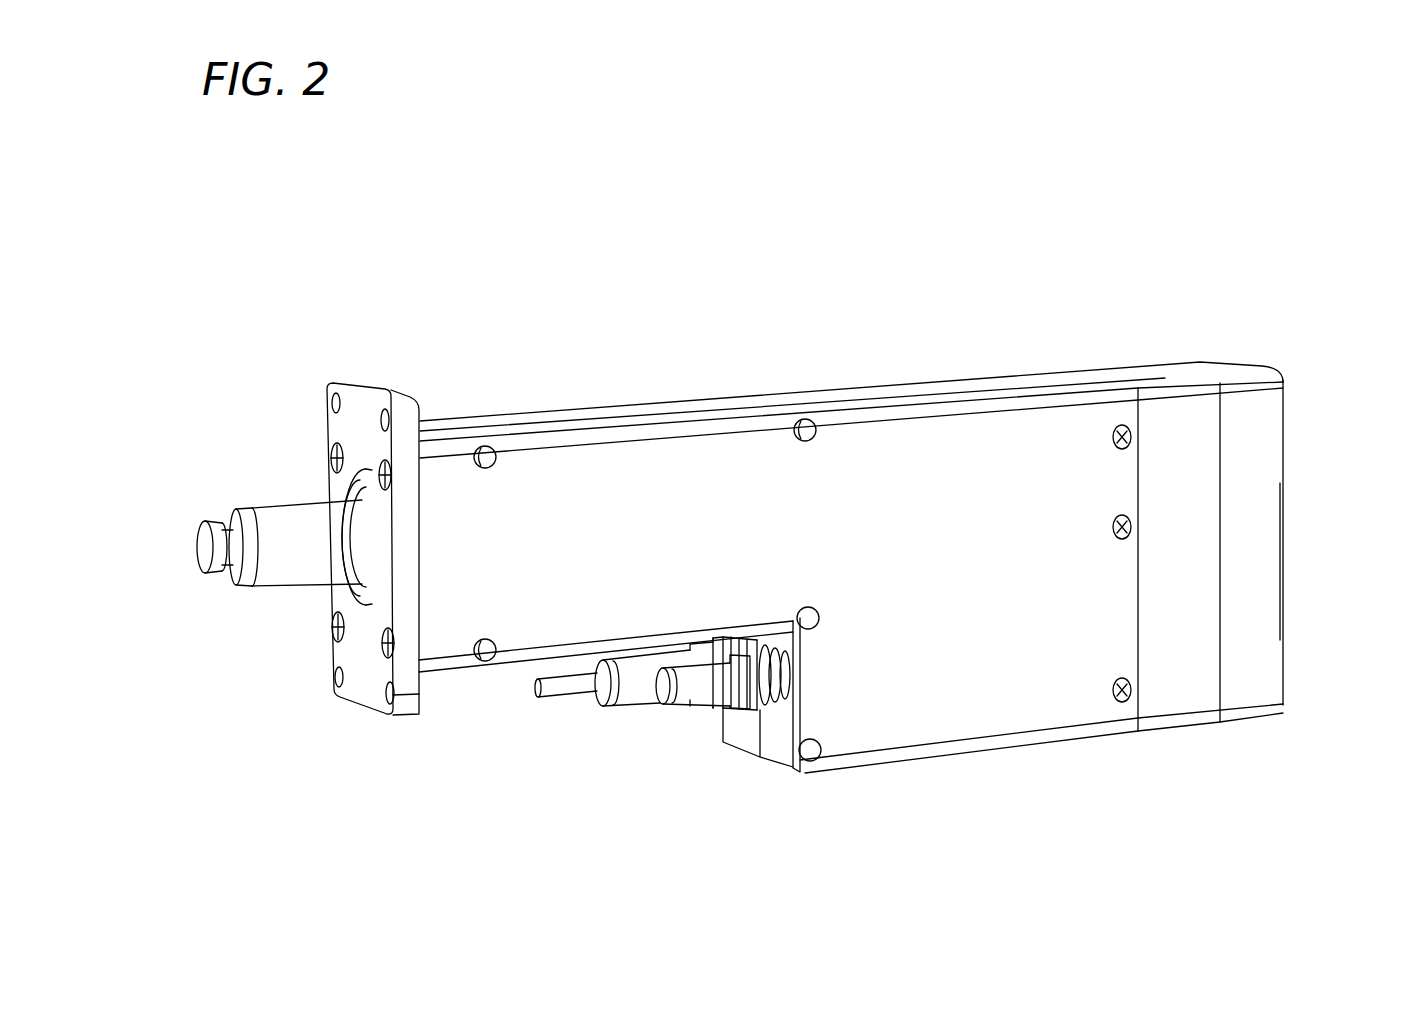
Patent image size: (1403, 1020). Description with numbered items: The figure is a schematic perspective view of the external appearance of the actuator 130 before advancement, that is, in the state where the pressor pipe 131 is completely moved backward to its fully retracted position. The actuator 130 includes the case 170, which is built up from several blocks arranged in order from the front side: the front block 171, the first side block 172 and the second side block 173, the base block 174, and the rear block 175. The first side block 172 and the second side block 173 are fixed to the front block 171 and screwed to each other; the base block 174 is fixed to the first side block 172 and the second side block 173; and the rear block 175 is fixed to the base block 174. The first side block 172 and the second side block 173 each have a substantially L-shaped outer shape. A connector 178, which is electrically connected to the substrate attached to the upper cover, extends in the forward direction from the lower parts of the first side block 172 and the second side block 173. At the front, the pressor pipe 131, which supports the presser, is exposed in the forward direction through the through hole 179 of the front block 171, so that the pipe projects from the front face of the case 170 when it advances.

The actuator 130 is at (243, 283).
The pressor pipe 131 is at (293, 510).
The case 170 is at (1082, 356).
The front block 171 is at (345, 381).
The first side block 172 is at (720, 403).
The second side block 173 is at (917, 720).
The base block 174 is at (1167, 707).
The rear block 175 is at (1263, 695).
The connector 178 is at (553, 695).
The through hole 179 is at (333, 587).